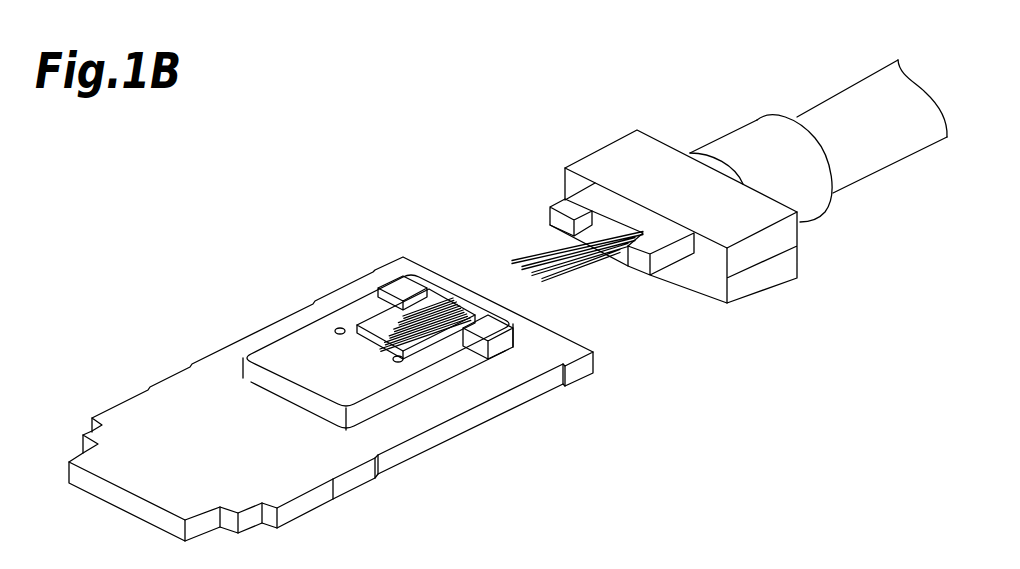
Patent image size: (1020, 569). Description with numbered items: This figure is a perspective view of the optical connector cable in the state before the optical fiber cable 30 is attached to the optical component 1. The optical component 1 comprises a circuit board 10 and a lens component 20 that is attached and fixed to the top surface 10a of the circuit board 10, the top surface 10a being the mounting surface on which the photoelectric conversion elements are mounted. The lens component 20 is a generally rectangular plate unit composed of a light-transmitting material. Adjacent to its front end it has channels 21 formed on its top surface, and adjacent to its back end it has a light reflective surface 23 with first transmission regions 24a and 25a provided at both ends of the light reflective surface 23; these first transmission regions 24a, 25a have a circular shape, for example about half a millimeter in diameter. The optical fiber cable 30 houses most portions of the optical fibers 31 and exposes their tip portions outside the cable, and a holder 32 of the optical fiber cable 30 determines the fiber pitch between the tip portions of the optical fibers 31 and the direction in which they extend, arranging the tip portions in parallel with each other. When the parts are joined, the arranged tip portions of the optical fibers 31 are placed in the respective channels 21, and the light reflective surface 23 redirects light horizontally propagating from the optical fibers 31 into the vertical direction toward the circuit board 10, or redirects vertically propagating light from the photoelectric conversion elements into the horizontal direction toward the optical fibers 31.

The optical component 1 is at (285, 234).
The circuit board 10 is at (205, 383).
The top surface 10a is at (507, 381).
The lens component 20 is at (301, 348).
The channels 21 is at (468, 317).
The light reflective surface 23 is at (357, 333).
The first transmission region 24a is at (398, 363).
The first transmission region 25a is at (342, 327).
The optical fiber cable 30 is at (816, 266).
The optical fibers 31 is at (546, 277).
The holder 32 is at (763, 279).